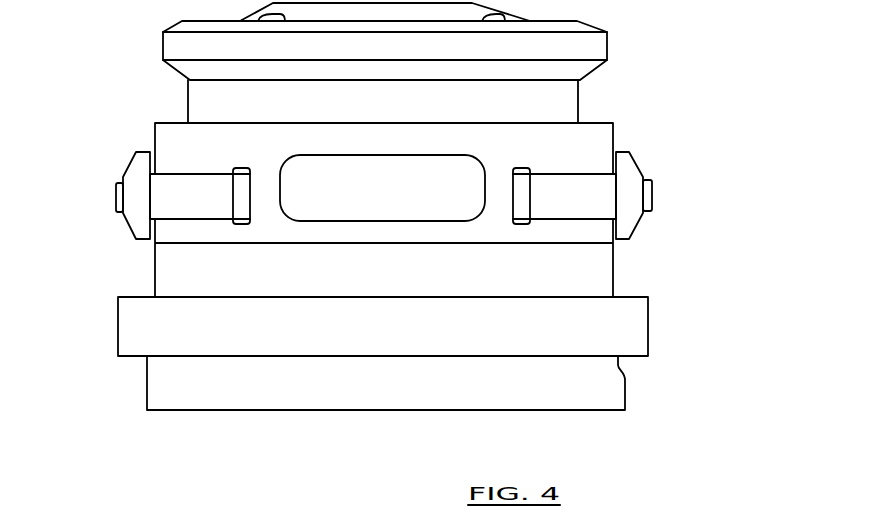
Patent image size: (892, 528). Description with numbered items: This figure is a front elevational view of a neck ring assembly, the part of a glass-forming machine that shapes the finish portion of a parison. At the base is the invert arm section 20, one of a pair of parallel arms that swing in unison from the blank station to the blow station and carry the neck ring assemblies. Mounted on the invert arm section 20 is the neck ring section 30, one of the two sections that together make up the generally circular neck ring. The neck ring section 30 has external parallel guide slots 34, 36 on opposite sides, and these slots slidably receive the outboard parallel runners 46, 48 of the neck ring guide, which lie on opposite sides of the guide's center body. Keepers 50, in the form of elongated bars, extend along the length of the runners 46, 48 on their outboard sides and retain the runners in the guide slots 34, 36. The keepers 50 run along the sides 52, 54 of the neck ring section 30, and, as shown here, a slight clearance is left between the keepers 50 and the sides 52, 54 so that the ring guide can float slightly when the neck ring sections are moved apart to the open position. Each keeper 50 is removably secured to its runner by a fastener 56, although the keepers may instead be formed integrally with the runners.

The invert arm section 20 is at (165, 380).
The neck ring section 30 is at (571, 105).
The guide slot 34 is at (580, 175).
The guide slot 36 is at (172, 176).
The runner 46 is at (585, 208).
The runner 48 is at (187, 212).
The keeper 50 is at (122, 222).
The side 52 is at (613, 280).
The side 54 is at (153, 272).
The fastener 56 is at (117, 192).